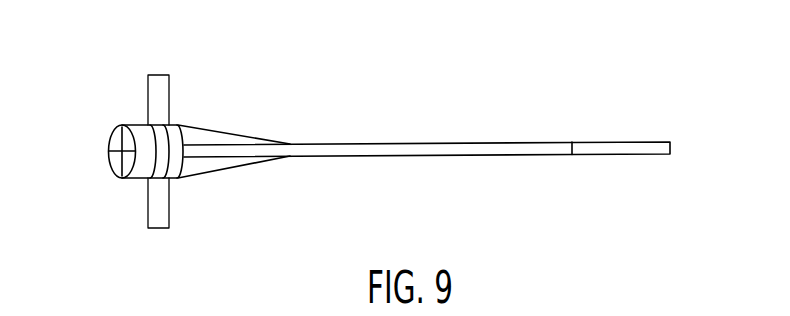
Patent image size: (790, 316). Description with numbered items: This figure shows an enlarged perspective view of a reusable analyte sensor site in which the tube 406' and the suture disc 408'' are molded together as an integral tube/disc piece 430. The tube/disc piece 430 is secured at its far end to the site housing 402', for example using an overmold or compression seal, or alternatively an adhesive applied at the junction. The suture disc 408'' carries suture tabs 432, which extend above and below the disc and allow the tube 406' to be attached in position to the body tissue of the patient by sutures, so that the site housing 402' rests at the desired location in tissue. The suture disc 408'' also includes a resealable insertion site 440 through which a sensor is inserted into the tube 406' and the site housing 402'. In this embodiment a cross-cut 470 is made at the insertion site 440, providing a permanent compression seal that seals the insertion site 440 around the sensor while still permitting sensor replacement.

The tube/disc piece 430 is at (321, 74).
The suture tabs 432 is at (163, 90).
The insertion site 440 is at (100, 141).
The cross-cut 470 is at (113, 170).
The suture disc 408'' is at (234, 123).
The tube 406' is at (378, 188).
The site housing 402' is at (621, 186).